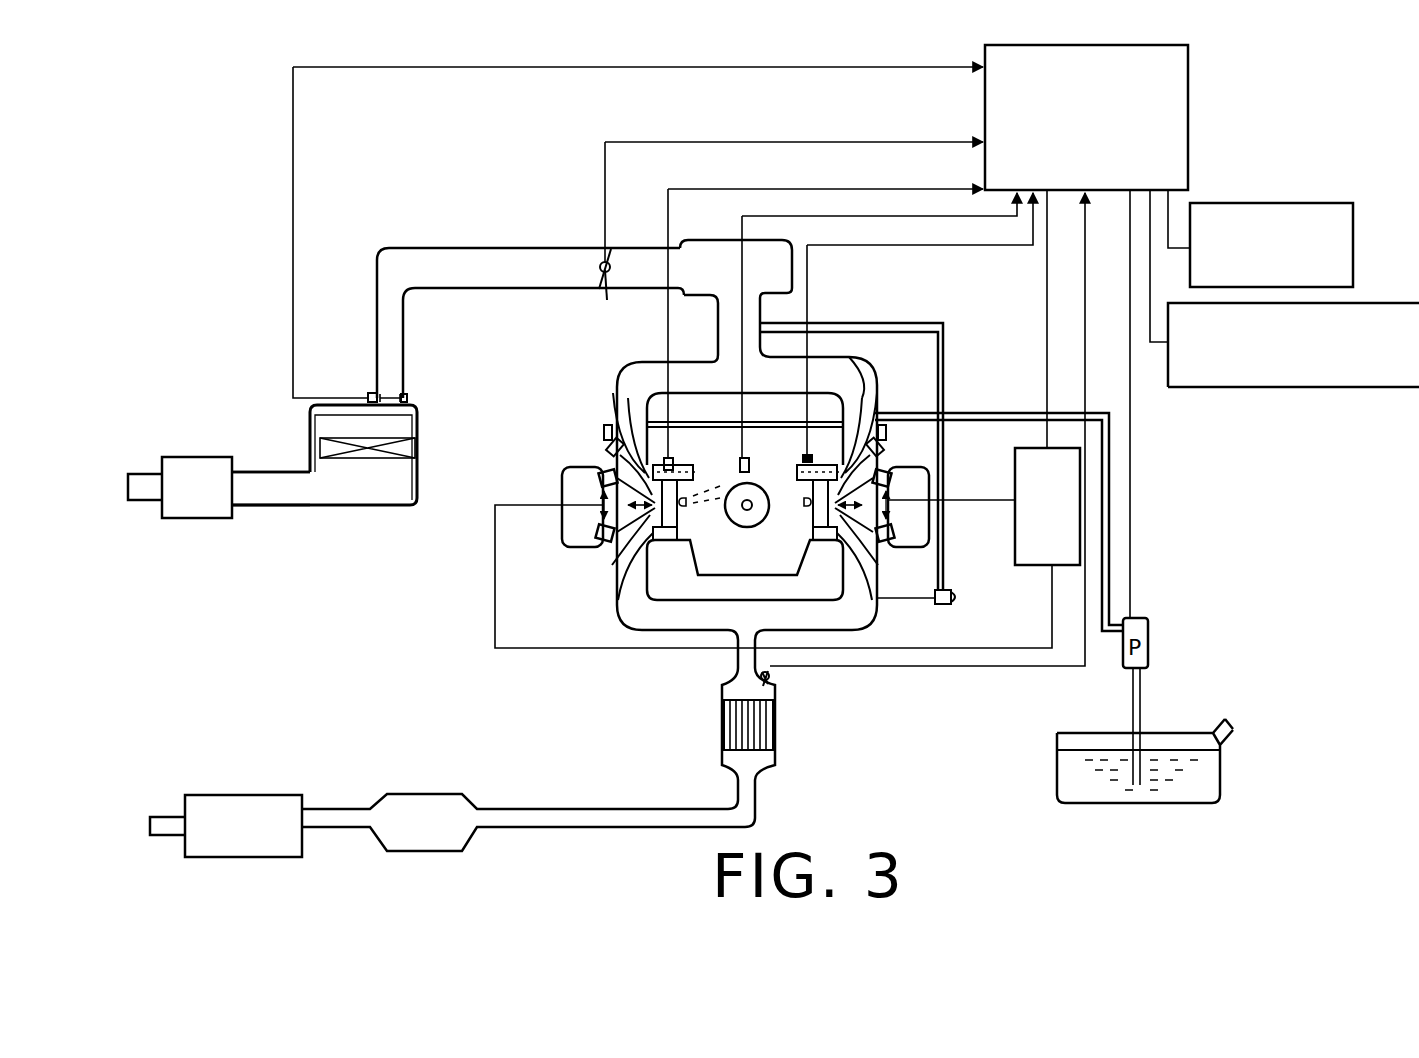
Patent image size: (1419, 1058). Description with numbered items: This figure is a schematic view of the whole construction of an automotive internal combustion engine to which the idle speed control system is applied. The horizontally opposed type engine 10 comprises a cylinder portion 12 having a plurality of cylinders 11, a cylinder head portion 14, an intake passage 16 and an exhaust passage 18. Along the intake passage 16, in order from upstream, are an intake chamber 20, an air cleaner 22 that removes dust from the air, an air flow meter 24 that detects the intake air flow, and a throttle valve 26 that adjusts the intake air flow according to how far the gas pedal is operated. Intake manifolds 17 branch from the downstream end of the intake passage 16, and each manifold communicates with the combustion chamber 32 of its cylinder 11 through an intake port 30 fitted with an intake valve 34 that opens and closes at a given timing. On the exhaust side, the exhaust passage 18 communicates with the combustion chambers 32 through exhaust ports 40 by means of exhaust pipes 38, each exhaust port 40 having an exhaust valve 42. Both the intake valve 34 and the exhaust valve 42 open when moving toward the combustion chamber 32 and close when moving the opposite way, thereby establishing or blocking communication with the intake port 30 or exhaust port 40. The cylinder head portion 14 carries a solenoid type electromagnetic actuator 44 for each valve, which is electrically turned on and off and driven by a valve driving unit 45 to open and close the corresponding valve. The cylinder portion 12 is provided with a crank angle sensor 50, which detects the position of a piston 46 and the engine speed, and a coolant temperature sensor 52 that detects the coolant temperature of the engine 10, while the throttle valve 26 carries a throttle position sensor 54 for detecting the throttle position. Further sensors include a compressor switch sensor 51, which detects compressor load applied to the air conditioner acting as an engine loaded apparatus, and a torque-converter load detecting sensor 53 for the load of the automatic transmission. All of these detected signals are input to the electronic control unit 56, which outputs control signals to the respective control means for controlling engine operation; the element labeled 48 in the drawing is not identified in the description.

The engine 10 is at (529, 366).
The cylinder 11 is at (560, 433).
The cylinder portion 12 is at (793, 563).
The cylinder head portion 14 is at (556, 480).
The intake passage 16 is at (482, 248).
The intake manifold 17 is at (650, 362).
The exhaust passage 18 is at (525, 810).
The intake chamber 20 is at (222, 518).
The air cleaner 22 is at (418, 478).
The air flow meter 24 is at (368, 396).
The throttle valve 26 is at (606, 302).
The intake port 30 is at (614, 394).
The combustion chamber 32 is at (677, 513).
The intake valve 34 is at (604, 452).
The exhaust pipe 38 is at (867, 615).
The exhaust port 40 is at (618, 600).
The exhaust valve 42 is at (612, 565).
The electromagnetic actuator 44 is at (600, 471).
The valve driving unit 45 is at (1028, 567).
The piston 46 is at (685, 480).
The crank angle sensor 48 is at (747, 510).
The crank angle sensor 50 is at (803, 458).
The compressor switch sensor 51 is at (1268, 203).
The coolant temperature sensor 52 is at (673, 470).
The torque-converter load detecting sensor 53 is at (1262, 388).
The throttle position sensor 54 is at (600, 263).
The electronic control unit (ECU) 56 is at (1188, 112).